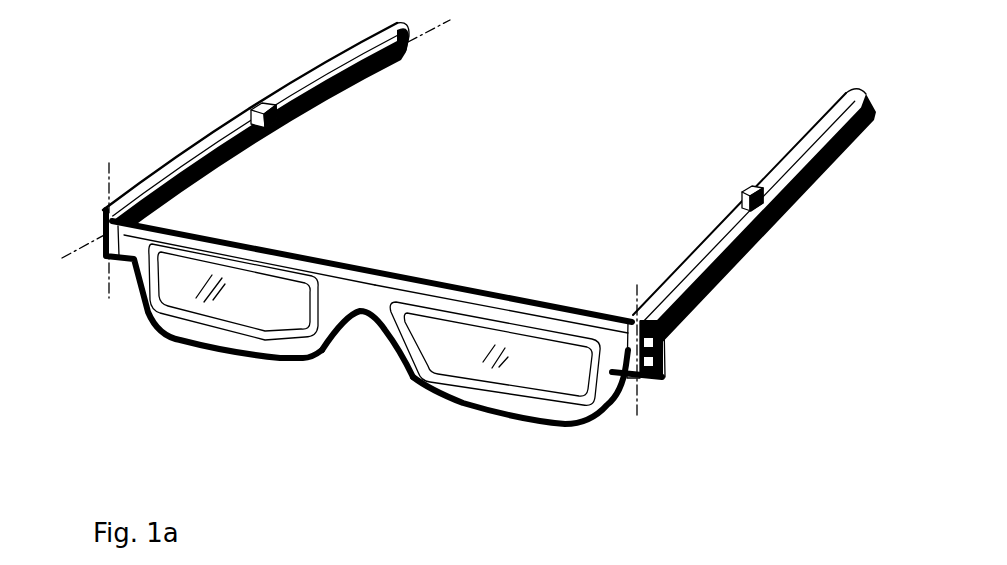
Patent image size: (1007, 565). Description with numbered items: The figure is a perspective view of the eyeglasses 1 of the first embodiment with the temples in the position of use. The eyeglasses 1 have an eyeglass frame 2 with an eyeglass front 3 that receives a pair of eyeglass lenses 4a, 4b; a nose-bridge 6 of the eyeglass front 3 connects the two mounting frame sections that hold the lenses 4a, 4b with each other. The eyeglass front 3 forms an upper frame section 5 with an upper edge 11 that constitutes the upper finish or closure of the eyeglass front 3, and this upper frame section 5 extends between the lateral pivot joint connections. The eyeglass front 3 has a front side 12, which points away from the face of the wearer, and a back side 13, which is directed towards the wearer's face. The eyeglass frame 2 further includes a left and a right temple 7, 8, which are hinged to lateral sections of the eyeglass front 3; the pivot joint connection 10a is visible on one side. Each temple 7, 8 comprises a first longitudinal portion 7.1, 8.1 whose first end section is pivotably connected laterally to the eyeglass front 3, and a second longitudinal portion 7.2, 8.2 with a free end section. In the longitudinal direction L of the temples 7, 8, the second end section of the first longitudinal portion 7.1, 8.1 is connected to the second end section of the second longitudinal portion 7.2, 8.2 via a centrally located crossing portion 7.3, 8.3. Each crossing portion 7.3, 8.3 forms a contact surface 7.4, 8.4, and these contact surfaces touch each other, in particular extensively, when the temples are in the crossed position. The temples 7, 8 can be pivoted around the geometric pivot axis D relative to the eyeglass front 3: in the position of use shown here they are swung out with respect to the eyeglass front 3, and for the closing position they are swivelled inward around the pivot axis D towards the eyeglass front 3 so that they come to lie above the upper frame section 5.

The eyeglasses 1 is at (480, 267).
The eyeglass frame 2 is at (612, 347).
The eyeglass front 3 is at (407, 388).
The eyeglass lens 4a is at (520, 375).
The eyeglass lens 4b is at (280, 310).
The upper frame section 5 is at (222, 245).
The nose-bridge 6 is at (362, 297).
The temple 7 is at (754, 186).
The first longitudinal portion 7.1 is at (720, 278).
The second longitudinal portion 7.2 is at (787, 150).
The crossing portion 7.3 is at (742, 197).
The contact surface 7.4 is at (772, 220).
The temple 8 is at (260, 126).
The first longitudinal portion 8.1 is at (167, 165).
The second longitudinal portion 8.2 is at (313, 68).
The crossing portion 8.3 is at (252, 105).
The contact surface 8.4 is at (282, 125).
The pivot joint connection 10a is at (665, 367).
The upper edge 11 is at (432, 280).
The front side 12 is at (190, 283).
The back side 13 is at (320, 254).
The pivot axis D is at (108, 292).
The longitudinal direction L is at (447, 30).